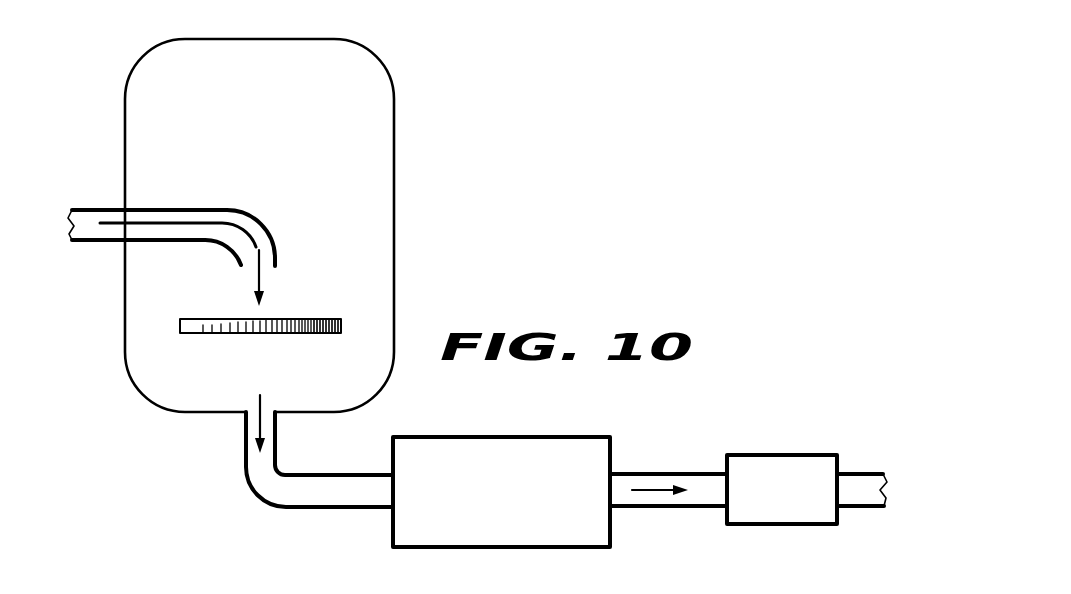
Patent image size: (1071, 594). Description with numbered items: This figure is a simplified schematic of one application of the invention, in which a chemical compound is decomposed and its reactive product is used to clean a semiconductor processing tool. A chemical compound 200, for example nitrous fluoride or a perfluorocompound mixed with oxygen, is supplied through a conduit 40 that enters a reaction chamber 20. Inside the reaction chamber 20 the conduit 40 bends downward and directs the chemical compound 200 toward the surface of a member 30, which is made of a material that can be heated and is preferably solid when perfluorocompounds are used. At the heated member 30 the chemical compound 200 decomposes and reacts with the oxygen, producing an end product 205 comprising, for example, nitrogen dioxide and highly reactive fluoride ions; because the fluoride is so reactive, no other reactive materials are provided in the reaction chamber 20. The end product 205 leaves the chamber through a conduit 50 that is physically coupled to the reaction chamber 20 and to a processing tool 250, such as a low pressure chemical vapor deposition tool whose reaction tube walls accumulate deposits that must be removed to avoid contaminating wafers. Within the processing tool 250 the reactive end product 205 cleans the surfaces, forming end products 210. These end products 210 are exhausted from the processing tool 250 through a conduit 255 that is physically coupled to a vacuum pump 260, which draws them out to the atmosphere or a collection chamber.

The reaction chamber 20 is at (380, 147).
The chemical compound 200 is at (103, 211).
The conduit 40 is at (174, 210).
The member 30 is at (193, 319).
The end product 205 is at (244, 428).
The conduit 50 is at (312, 508).
The processing tool 250 is at (520, 508).
The end products 210 is at (648, 492).
The conduit 255 is at (628, 473).
The vacuum pump 260 is at (793, 506).